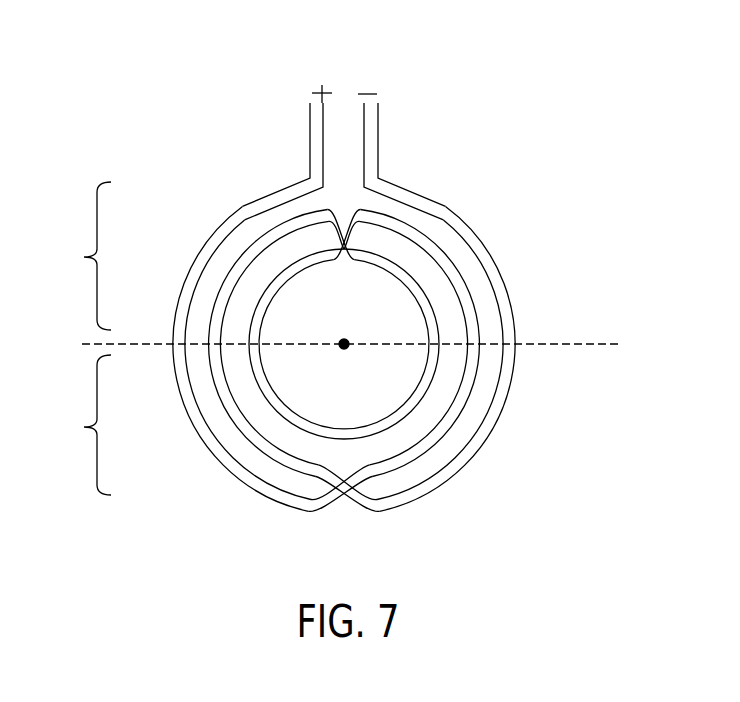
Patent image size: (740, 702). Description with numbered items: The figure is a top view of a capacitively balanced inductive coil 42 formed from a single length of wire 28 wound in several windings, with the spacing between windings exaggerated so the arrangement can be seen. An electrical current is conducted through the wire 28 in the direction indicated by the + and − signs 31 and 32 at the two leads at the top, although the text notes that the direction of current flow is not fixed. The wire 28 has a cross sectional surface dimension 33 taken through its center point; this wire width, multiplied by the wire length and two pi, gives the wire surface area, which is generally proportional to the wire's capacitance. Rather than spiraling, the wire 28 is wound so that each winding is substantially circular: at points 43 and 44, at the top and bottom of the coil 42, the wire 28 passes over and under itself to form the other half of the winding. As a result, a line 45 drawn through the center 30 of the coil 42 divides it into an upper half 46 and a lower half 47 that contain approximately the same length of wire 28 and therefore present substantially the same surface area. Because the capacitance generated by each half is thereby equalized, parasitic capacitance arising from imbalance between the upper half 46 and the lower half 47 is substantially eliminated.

The wire 28 is at (507, 385).
The center 30 is at (343, 350).
The + sign 31 is at (326, 84).
The − sign 32 is at (371, 86).
The cross sectional surface dimension 33 is at (470, 311).
The coil 42 is at (481, 225).
The point 43 is at (345, 215).
The point 44 is at (342, 512).
The line 45 is at (349, 343).
The upper half 46 is at (83, 256).
The lower half 47 is at (83, 425).